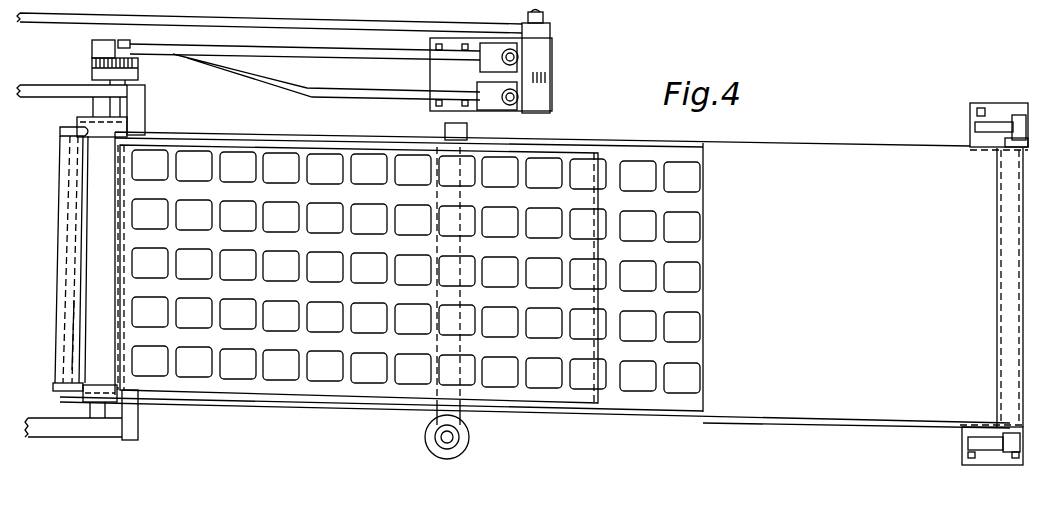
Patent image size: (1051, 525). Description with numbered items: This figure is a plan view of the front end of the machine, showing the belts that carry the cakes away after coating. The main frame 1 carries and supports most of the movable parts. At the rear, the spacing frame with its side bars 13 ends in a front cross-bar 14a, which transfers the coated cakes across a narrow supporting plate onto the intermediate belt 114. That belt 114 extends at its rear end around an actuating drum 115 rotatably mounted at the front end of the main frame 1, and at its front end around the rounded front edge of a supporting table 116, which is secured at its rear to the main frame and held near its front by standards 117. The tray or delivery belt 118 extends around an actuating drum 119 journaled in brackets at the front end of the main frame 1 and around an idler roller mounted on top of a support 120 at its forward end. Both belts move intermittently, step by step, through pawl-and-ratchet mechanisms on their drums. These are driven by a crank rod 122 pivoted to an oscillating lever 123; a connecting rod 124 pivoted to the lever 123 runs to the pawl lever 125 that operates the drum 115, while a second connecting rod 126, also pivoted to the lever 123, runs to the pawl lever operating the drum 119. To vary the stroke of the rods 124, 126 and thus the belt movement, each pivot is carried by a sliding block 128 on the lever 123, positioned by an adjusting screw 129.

The main frame 1 is at (52, 89).
The side bars 13 is at (63, 133).
The cross-bar 14a is at (85, 351).
The intermediate belt 114 is at (237, 143).
The actuating drum 115 is at (113, 127).
The supporting table 116 is at (408, 131).
The standards 117 is at (457, 437).
The delivery belt 118 is at (308, 121).
The actuating drum 119 is at (68, 123).
The support 120 is at (988, 127).
The crank rod 122 is at (305, 13).
The oscillating lever 123 is at (550, 92).
The connecting rod 124 is at (392, 57).
The pawl lever 125 is at (138, 78).
The second connecting rod 126 is at (352, 98).
The sliding block 128 is at (512, 42).
The adjusting screw 129 is at (518, 55).